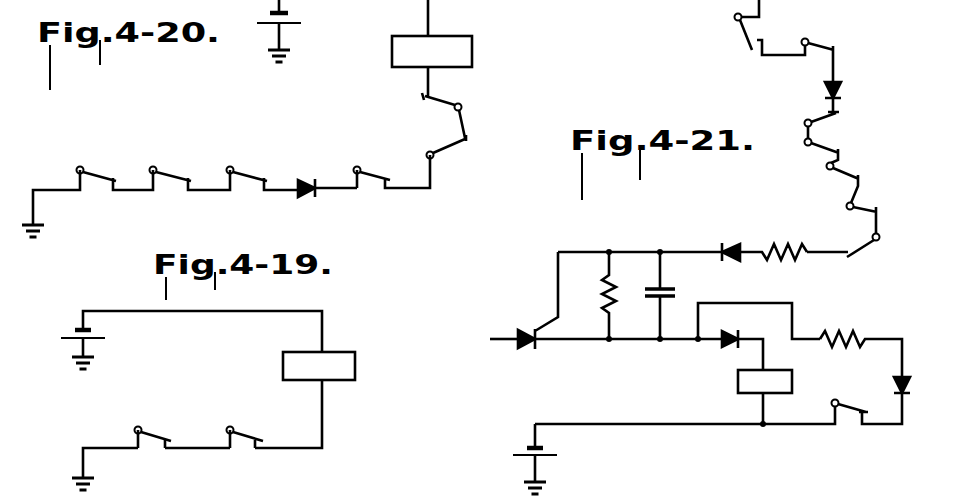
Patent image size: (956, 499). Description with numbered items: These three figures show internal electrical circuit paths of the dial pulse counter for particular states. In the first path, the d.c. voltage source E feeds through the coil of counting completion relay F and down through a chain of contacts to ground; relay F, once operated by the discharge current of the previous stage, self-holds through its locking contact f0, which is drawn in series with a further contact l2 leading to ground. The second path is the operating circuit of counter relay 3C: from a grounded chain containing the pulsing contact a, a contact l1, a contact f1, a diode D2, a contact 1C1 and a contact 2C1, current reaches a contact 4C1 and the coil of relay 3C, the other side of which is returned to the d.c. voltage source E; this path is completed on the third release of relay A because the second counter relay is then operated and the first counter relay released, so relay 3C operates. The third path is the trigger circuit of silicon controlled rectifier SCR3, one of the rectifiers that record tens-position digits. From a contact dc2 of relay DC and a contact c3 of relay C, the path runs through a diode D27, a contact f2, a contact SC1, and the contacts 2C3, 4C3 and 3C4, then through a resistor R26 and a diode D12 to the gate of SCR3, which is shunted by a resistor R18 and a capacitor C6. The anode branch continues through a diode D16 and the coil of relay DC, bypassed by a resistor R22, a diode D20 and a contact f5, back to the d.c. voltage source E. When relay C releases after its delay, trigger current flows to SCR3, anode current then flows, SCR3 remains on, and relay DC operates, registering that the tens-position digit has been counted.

In FIG. 4-20, the d.c. voltage source E is at (285, 31).
In FIG. 4-19, the d.c. voltage source E is at (93, 348).
In FIG. 4-21, the d.c. voltage source E is at (544, 459).
In FIG. 4-20, the contact a is at (115, 164).
In FIG. 4-20, the switch contact l' l1 is at (190, 167).
In FIG. 4-20, the contact f1 is at (263, 165).
In FIG. 4-20, the diode D2 is at (327, 173).
In FIG. 4-20, the contact 1C1 is at (392, 167).
In FIG. 4-20, the contact 2C1 is at (457, 141).
In FIG. 4-20, the contact 4C1 is at (455, 89).
In FIG. 4-20, the relay 3C is at (453, 33).
In FIG. 4-19, the relay F is at (315, 400).
In FIG. 4-19, the locking contact f0 is at (214, 427).
In FIG. 4-19, the switch contact l2 is at (127, 442).
In FIG. 4-21, the contact dc2 is at (747, 27).
In FIG. 4-21, the contact c3 is at (821, 50).
In FIG. 4-21, the diode D27 is at (858, 97).
In FIG. 4-21, the contact f2 is at (829, 125).
In FIG. 4-21, the contact 5C1 SC1 is at (838, 149).
In FIG. 4-21, the contact 2C3 is at (854, 180).
In FIG. 4-21, the contact 4C3 is at (879, 212).
In FIG. 4-21, the contact 3C4 is at (857, 254).
In FIG. 4-21, the resistor R26 is at (774, 240).
In FIG. 4-21, the diode D12 is at (653, 240).
In FIG. 4-21, the resistor R18 is at (594, 295).
In FIG. 4-21, the capacitor C6 is at (670, 295).
In FIG. 4-21, the silicon controlled rectifier SCR3 is at (603, 300).
In FIG. 4-21, the diode D16 is at (759, 336).
In FIG. 4-21, the relay DC is at (741, 398).
In FIG. 4-21, the resistor R22 is at (859, 341).
In FIG. 4-21, the diode D20 is at (883, 389).
In FIG. 4-21, the contact f5 is at (701, 401).